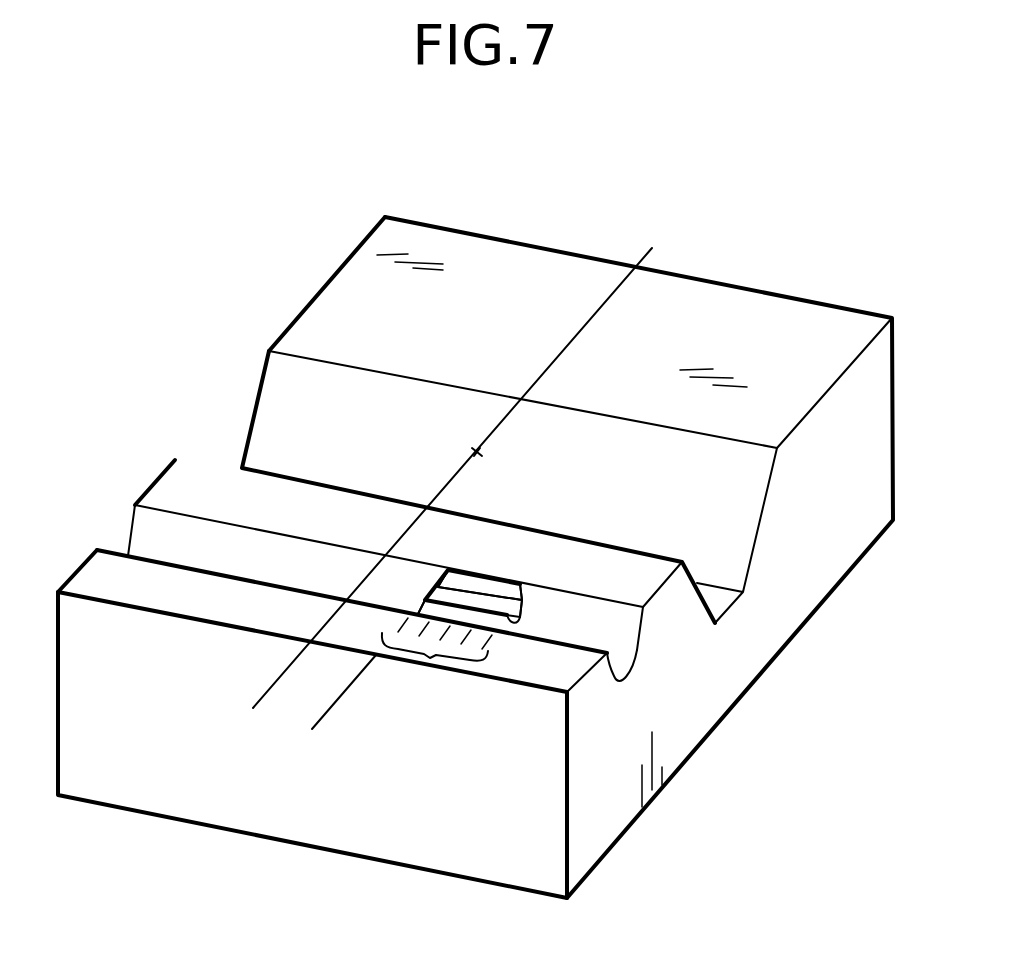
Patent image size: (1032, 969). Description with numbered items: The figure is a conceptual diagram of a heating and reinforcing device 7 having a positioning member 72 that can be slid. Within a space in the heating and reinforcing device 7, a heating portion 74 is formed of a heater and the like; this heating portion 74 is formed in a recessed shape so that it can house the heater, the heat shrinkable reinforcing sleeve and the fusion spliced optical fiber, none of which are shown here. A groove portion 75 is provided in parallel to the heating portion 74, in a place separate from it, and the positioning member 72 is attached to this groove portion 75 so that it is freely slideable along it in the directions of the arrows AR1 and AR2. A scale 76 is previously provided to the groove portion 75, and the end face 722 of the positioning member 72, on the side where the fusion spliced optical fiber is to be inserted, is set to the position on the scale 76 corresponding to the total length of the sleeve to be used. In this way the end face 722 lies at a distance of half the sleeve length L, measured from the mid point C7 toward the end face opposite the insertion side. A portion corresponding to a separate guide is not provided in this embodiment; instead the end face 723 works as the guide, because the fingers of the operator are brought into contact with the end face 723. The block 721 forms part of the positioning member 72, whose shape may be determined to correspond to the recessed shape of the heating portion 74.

The heating and reinforcing device 7 is at (610, 254).
The heating portion 74 is at (328, 413).
The end face 723 is at (149, 478).
The groove portion 75 is at (639, 648).
The positioning member 72 is at (493, 573).
The upper block portion 721 is at (518, 582).
The end face 722 is at (438, 575).
The scale 76 is at (429, 657).
The mid point C7 is at (477, 452).
The total length of the heat shrinkable reinforcing sleeve L is at (357, 728).
The arrow AR2 is at (373, 583).
The arrow AR1 is at (587, 624).